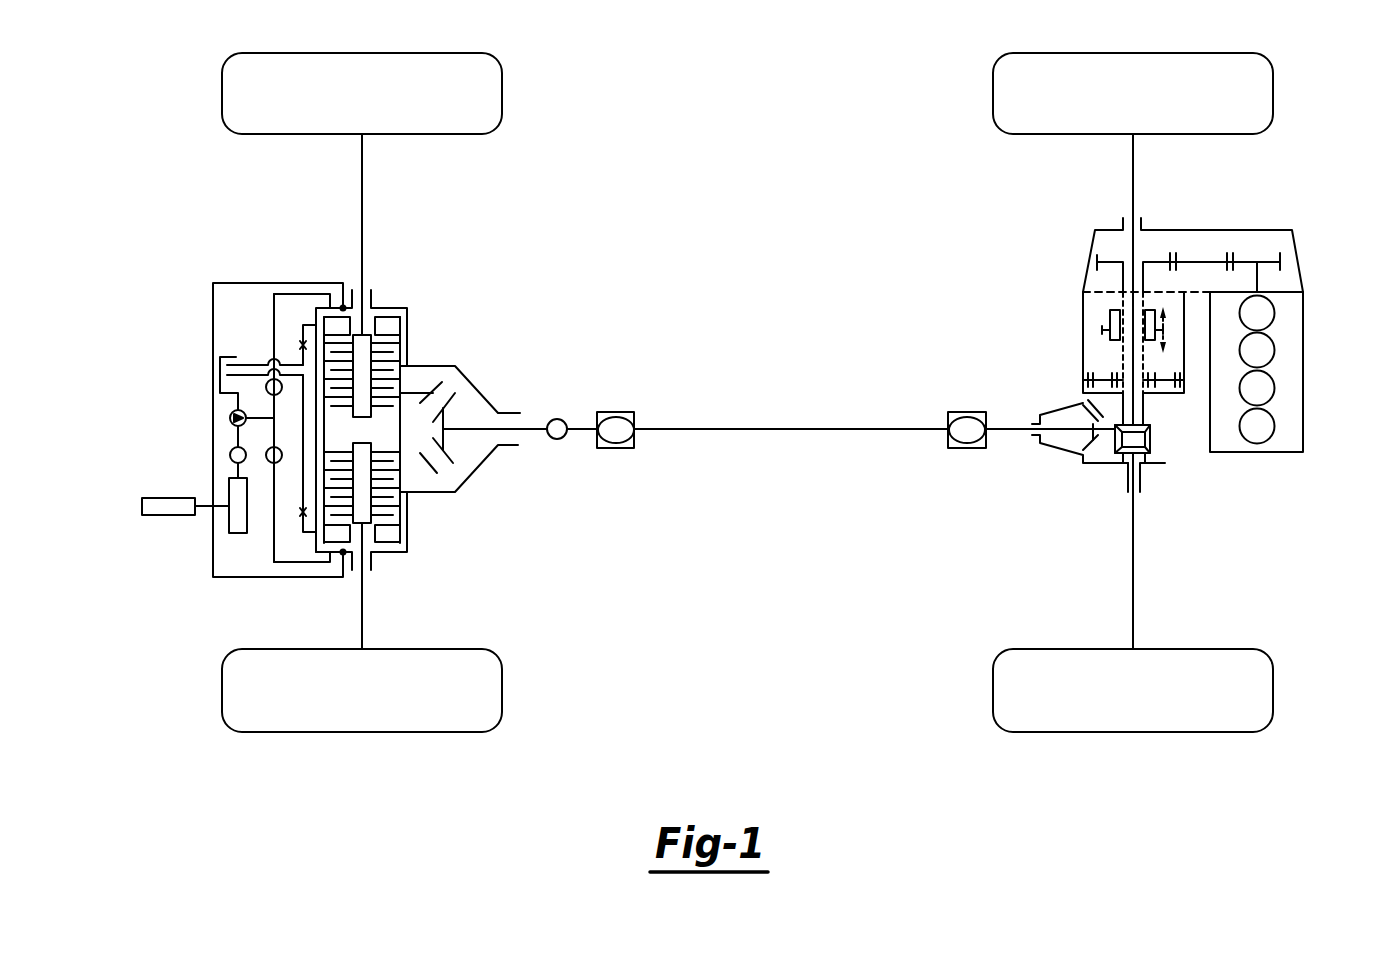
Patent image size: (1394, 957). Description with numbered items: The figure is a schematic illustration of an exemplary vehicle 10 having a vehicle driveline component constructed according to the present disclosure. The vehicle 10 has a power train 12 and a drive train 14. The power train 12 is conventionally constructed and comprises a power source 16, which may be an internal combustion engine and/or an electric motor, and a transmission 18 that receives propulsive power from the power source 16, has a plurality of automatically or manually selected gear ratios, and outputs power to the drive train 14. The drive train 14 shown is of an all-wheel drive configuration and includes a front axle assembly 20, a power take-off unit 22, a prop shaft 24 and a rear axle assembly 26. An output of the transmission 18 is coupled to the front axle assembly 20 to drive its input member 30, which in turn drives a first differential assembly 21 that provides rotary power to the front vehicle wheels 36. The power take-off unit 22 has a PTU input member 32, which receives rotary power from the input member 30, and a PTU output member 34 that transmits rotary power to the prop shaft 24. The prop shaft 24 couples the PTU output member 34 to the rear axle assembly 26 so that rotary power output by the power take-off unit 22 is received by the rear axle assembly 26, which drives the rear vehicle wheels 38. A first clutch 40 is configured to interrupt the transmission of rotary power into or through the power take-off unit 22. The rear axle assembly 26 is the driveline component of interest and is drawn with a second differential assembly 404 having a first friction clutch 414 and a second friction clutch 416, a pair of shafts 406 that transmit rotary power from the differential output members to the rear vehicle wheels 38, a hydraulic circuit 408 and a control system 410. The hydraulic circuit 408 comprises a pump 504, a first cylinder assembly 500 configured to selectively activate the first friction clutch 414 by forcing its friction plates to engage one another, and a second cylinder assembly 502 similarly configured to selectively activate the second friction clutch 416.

The vehicle 10 is at (196, 758).
The power train 12 is at (1324, 365).
The drive train 14 is at (773, 369).
The power source 16 is at (1303, 440).
The transmission 18 is at (1292, 234).
The front axle assembly 20 is at (1128, 490).
The first differential assembly 21 is at (1156, 445).
The power take-off unit 22 is at (1062, 453).
The prop shaft 24 is at (668, 428).
The rear axle assembly 26 is at (521, 296).
The input member 30 is at (1122, 268).
The PTU input member 32 is at (1097, 405).
The PTU output member 34 is at (1012, 428).
The front vehicle wheels 36 is at (993, 92).
The rear vehicle wheels 38 is at (222, 92).
The first clutch 40 is at (1250, 370).
The second differential assembly 404 is at (412, 461).
The shafts 406 is at (362, 172).
The hydraulic circuit 408 is at (228, 436).
The control system 410 is at (232, 540).
The first friction clutch 414 is at (402, 354).
The second friction clutch 416 is at (406, 508).
The first cylinder assembly 500 is at (392, 299).
The second cylinder assembly 502 is at (391, 556).
The pump 504 is at (229, 418).